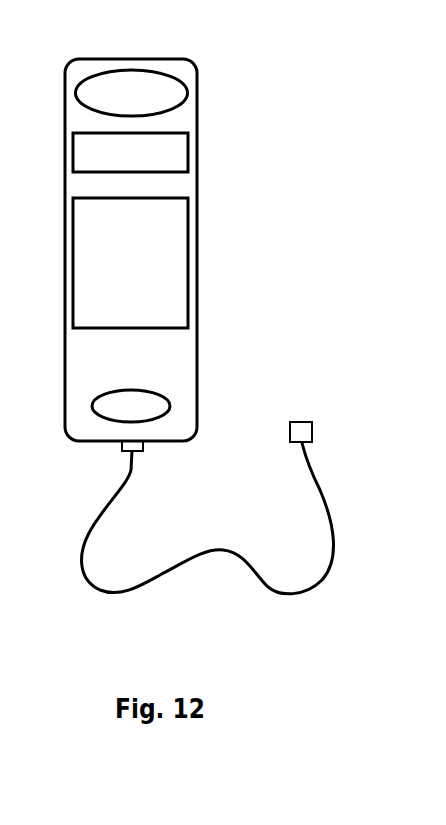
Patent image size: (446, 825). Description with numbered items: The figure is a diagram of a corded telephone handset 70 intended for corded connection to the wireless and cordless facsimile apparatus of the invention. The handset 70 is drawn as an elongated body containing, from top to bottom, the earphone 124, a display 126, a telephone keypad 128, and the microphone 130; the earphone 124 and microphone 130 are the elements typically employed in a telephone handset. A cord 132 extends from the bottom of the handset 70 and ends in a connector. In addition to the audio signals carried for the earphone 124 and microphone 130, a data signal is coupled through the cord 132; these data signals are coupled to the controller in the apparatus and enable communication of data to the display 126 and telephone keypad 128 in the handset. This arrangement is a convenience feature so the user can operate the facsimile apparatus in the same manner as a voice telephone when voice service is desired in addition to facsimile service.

The corded telephone handset 70 is at (107, 58).
The earphone 124 is at (188, 97).
The display 126 is at (188, 160).
The telephone keypad 128 is at (188, 277).
The microphone 130 is at (163, 398).
The cord 132 is at (230, 548).